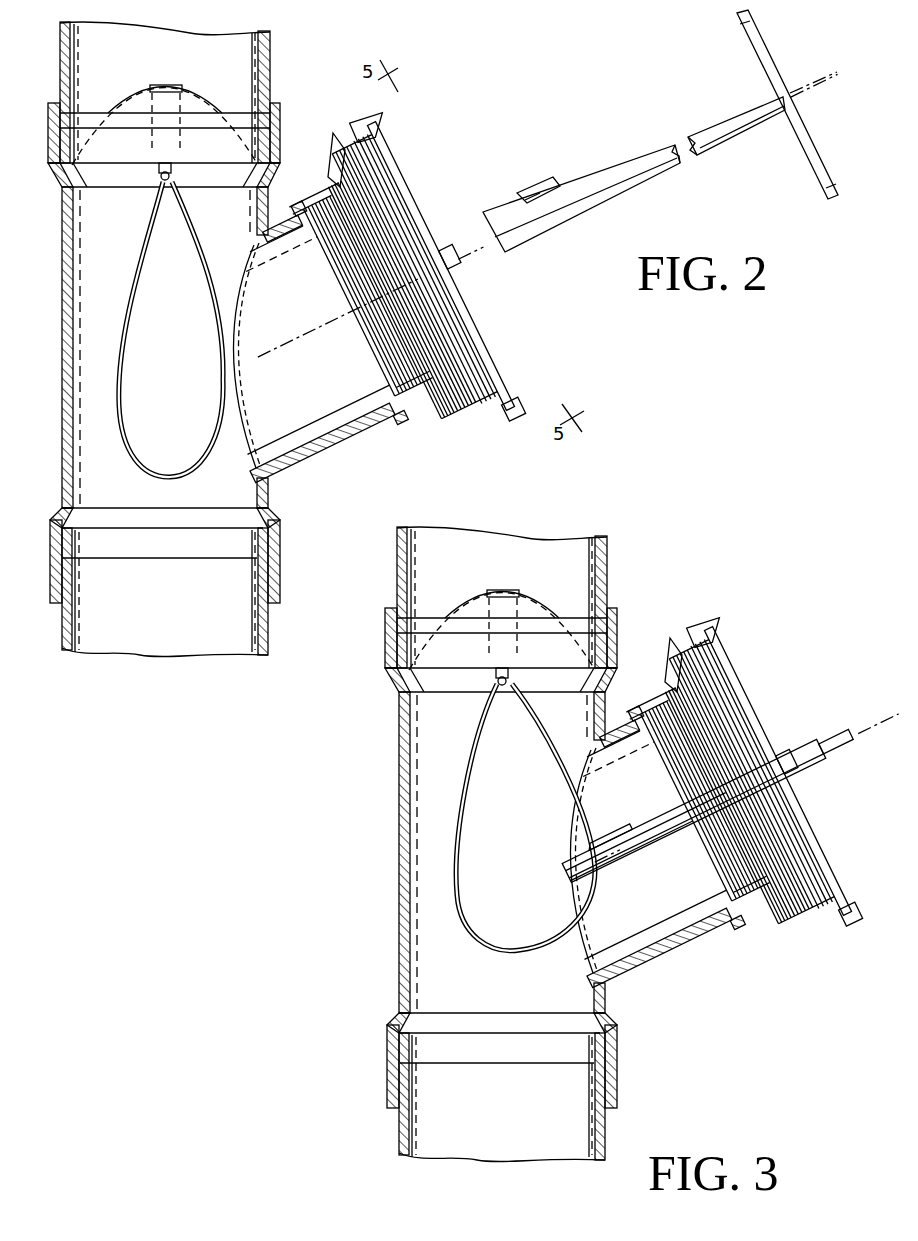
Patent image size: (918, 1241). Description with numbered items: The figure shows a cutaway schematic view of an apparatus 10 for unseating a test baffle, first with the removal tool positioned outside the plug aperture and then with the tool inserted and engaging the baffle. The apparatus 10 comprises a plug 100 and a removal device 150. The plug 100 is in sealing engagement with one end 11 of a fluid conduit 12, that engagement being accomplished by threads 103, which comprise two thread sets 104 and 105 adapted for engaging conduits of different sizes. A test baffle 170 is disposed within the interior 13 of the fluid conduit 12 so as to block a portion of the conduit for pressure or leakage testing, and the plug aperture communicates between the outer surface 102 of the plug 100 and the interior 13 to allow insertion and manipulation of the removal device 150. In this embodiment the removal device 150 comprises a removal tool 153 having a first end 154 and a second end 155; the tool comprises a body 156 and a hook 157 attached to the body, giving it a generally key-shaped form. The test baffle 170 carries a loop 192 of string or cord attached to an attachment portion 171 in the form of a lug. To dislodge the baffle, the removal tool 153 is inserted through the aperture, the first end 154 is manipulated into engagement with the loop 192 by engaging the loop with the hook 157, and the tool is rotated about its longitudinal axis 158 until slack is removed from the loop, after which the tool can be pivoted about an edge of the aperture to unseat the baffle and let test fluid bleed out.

In FIG. 2, the apparatus 10 is at (341, 465).
In FIG. 3, the apparatus 10 is at (352, 888).
In FIG. 2, the end of fluid conduit 11 is at (50, 150).
In FIG. 3, the end of fluid conduit 11 is at (560, 858).
In FIG. 2, the fluid conduit 12 is at (62, 285).
In FIG. 3, the fluid conduit 12 is at (501, 844).
In FIG. 2, the interior of fluid conduit 13 is at (296, 298).
In FIG. 3, the interior of fluid conduit 13 is at (617, 852).
In FIG. 3, the plug 100 is at (778, 771).
In FIG. 2, the outer surface of plug 102 is at (400, 203).
In FIG. 2, the threads 103 is at (340, 157).
In FIG. 3, the threads 103 is at (760, 803).
In FIG. 2, the thread set 104 is at (440, 398).
In FIG. 3, the thread set 104 is at (696, 771).
In FIG. 2, the thread set 105 is at (485, 400).
In FIG. 3, the thread set 105 is at (743, 759).
In FIG. 2, the removal device 150 is at (630, 187).
In FIG. 3, the removal device 150 is at (717, 810).
In FIG. 2, the removal tool 153 is at (668, 170).
In FIG. 3, the removal tool 153 is at (824, 717).
In FIG. 2, the first end of removal tool 154 is at (552, 227).
In FIG. 3, the first end of removal tool 154 is at (646, 843).
In FIG. 2, the second end of removal tool 155 is at (737, 30).
In FIG. 2, the body of removal tool 156 is at (713, 123).
In FIG. 3, the body of removal tool 156 is at (632, 873).
In FIG. 2, the hook 157 is at (518, 193).
In FIG. 3, the hook 157 is at (610, 884).
In FIG. 2, the tool longitudinal axis 158 is at (810, 82).
In FIG. 3, the tool longitudinal axis 158 is at (868, 697).
In FIG. 2, the test baffle 170 is at (217, 101).
In FIG. 3, the test baffle 170 is at (502, 618).
In FIG. 2, the attachment portion 171 is at (160, 180).
In FIG. 3, the attachment portion 171 is at (470, 701).
In FIG. 2, the loop 192 is at (128, 398).
In FIG. 3, the loop 192 is at (517, 837).